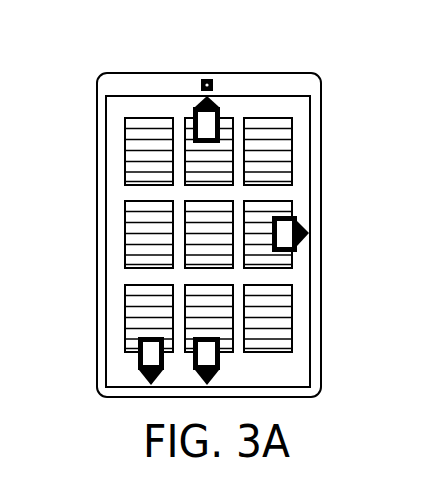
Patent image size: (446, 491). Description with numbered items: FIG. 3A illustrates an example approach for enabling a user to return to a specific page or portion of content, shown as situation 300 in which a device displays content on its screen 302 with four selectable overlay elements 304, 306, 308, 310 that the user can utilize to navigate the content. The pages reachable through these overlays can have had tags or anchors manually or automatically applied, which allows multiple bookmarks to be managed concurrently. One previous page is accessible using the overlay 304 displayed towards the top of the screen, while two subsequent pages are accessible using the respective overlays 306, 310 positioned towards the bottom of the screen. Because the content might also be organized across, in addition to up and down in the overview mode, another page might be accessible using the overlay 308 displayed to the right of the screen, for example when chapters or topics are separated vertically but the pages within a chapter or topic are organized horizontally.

The situation 300 is at (360, 76).
The display screen 302 is at (106, 235).
The overlay 304 is at (184, 131).
The overlay 306 is at (135, 367).
The overlay 308 is at (305, 239).
The overlay 310 is at (222, 372).